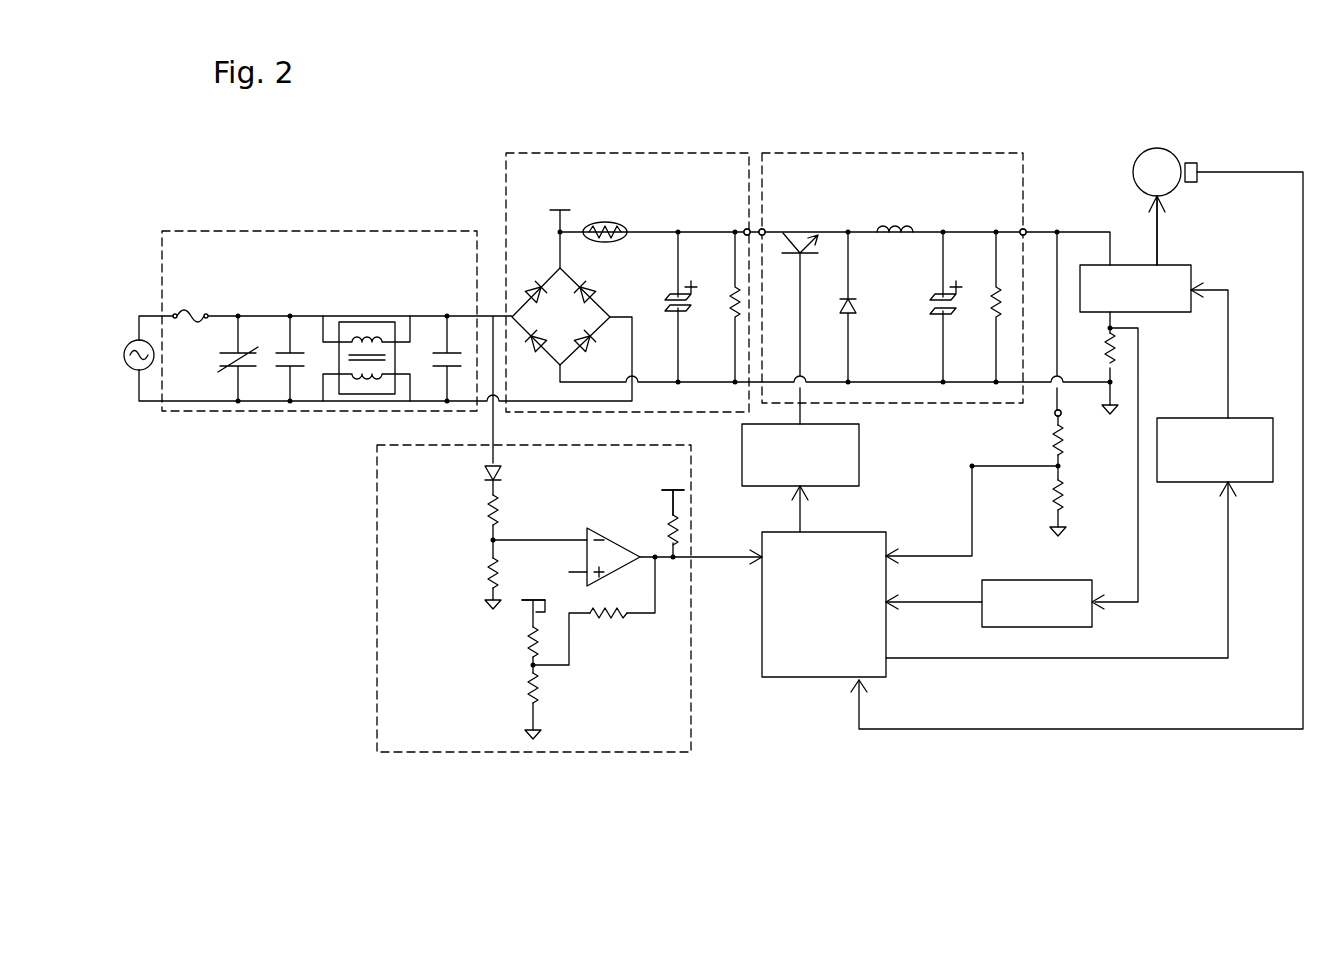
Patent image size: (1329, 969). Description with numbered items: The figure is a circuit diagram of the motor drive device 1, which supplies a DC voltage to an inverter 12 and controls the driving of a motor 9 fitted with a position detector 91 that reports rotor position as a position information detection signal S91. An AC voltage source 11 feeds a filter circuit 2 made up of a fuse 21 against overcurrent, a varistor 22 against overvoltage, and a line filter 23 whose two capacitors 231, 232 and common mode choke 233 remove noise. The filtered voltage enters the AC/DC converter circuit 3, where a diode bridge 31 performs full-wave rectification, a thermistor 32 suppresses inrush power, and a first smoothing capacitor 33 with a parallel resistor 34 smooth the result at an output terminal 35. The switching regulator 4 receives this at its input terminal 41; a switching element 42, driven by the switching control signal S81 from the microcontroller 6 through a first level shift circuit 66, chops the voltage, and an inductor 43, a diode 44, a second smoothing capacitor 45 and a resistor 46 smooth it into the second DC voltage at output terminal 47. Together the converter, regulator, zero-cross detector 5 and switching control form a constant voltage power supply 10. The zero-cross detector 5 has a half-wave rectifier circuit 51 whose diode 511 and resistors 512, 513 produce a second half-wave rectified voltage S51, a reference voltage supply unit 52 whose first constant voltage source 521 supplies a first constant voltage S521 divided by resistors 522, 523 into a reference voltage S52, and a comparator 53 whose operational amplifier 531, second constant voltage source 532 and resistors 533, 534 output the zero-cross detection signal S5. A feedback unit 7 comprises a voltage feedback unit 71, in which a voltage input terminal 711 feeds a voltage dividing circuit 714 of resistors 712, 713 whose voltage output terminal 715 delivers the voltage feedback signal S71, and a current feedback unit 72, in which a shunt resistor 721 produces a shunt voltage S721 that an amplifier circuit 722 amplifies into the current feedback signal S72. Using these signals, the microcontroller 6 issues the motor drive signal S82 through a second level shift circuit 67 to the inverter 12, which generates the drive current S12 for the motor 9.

The motor drive device 1 is at (1019, 122).
The filter circuit 2 is at (306, 231).
The AC/DC converter circuit 3 is at (597, 153).
The switching regulator 4 is at (864, 153).
The zero-cross detector 5 is at (375, 648).
The microcontroller 6 is at (800, 678).
The feedback unit 7 is at (1188, 535).
The motor 9 is at (1140, 152).
The constant voltage power supply 10 is at (461, 190).
The AC voltage source 11 is at (139, 338).
The inverter 12 is at (1180, 265).
The fuse 21 is at (193, 314).
The varistor 22 is at (230, 368).
The line filter 23 is at (445, 276).
The capacitor 231 is at (300, 350).
The capacitor 232 is at (438, 350).
The common mode choke 233 is at (358, 337).
The diode bridge 31 is at (547, 257).
The thermistor 32 is at (609, 223).
The first smoothing capacitor 33 is at (667, 297).
The resistor 34 is at (732, 312).
The output terminal 35 is at (746, 229).
The input terminal 41 is at (763, 230).
The switching element 42 is at (790, 240).
The inductor 43 is at (896, 230).
The diode 44 is at (857, 306).
The second smoothing capacitor 45 is at (936, 296).
The resistor 46 is at (990, 315).
The output terminal 47 is at (1021, 230).
The half-wave rectifier circuit 51 is at (418, 470).
The diode 511 is at (483, 476).
The resistor 512 is at (485, 503).
The resistor 513 is at (486, 567).
The reference voltage supply unit 52 is at (460, 625).
The first constant voltage source 521 is at (527, 599).
The resistor 522 is at (527, 648).
The resistor 523 is at (527, 703).
The comparator 53 is at (656, 630).
The operational amplifier 531 is at (568, 527).
The second constant voltage source 532 is at (670, 488).
The resistor 533 is at (672, 527).
The resistor 534 is at (600, 617).
The first level shift circuit 66 is at (859, 457).
The second level shift circuit 67 is at (1247, 417).
The voltage feedback unit 71 is at (1088, 525).
The voltage input terminal 711 is at (1055, 413).
The resistor 712 is at (1055, 440).
The resistor 713 is at (1055, 498).
The voltage dividing circuit 714 is at (1079, 468).
The voltage output terminal 715 is at (971, 467).
The current feedback unit 72 is at (1152, 571).
The shunt resistor 721 is at (1114, 355).
The amplifier circuit 722 is at (1080, 627).
The position detector 91 is at (1192, 162).
The zero-cross detection signal S5 is at (710, 560).
The drive current S12 is at (1154, 236).
The second half-wave rectified voltage S51 is at (535, 539).
The reference voltage S52 is at (564, 666).
The first constant voltage S521 is at (549, 612).
The voltage feedback signal S71 is at (973, 537).
The current feedback signal S72 is at (920, 603).
The shunt voltage S721 is at (1138, 498).
The switching control signal S81 is at (812, 522).
The motor drive signal S82 is at (983, 659).
The position information detection signal S91 is at (983, 730).